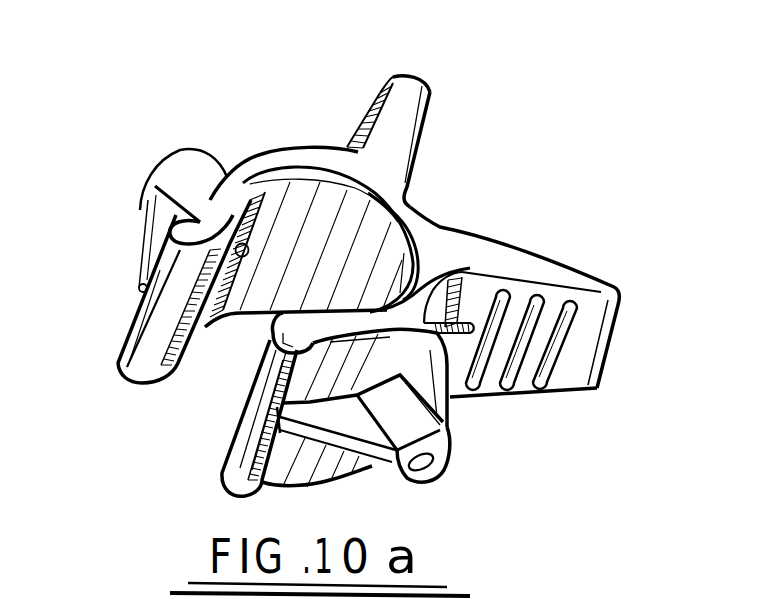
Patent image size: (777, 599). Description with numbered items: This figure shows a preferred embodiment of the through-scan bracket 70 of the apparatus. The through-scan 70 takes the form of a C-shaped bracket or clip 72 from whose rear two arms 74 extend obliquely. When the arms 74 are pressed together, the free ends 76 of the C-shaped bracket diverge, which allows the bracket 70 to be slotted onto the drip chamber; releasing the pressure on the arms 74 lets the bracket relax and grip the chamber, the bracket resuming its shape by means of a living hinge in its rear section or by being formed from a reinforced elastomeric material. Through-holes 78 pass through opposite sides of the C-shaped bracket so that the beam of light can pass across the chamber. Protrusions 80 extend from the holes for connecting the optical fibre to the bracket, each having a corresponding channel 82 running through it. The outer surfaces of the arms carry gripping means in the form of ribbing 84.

The through-scan bracket 70 is at (297, 93).
The C-shaped bracket or clip 72 is at (245, 178).
The arms 74 is at (387, 145).
The free ends 76 is at (158, 382).
The through-holes 78 is at (140, 287).
The protrusions 80 is at (350, 425).
The channel 82 is at (447, 467).
The ribbing 84 is at (545, 375).